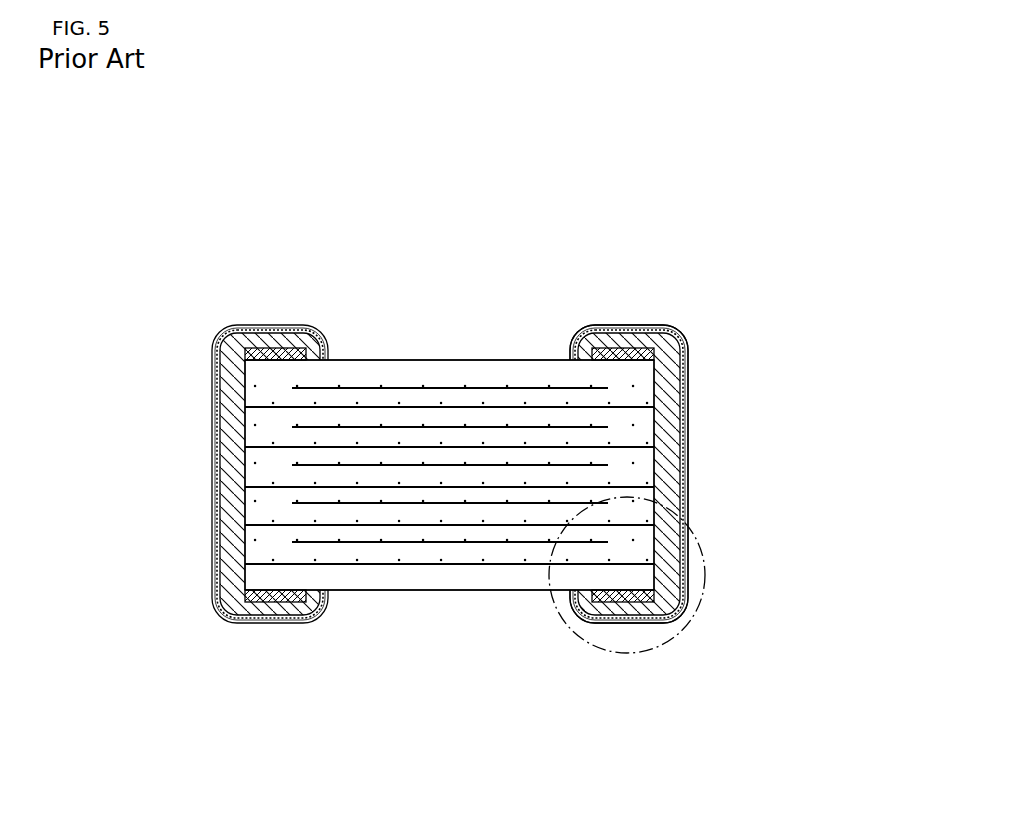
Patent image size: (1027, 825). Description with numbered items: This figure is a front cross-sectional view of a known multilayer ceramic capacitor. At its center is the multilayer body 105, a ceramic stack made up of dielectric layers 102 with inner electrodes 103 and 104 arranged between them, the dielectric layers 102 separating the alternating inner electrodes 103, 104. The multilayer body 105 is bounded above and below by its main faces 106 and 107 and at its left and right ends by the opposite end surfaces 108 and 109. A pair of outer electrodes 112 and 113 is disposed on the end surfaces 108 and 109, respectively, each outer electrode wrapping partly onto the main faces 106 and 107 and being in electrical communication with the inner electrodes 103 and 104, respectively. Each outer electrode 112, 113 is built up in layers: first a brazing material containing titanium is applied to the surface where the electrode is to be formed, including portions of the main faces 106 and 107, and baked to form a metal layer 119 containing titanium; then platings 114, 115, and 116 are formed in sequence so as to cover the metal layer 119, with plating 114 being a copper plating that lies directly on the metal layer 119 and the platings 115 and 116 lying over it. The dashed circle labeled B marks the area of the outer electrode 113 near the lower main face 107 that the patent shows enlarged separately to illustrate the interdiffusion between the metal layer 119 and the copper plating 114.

The dielectric layers 102 is at (410, 435).
The inner electrode 103 is at (477, 447).
The inner electrode 104 is at (448, 503).
The multilayer body 105 is at (522, 359).
The main face 106 is at (417, 360).
The main face 107 is at (488, 590).
The end surface 108 is at (247, 462).
The end surface 109 is at (655, 443).
The outer electrode 112 is at (412, 469).
The outer electrode 113 is at (776, 325).
The plating 114 is at (213, 365).
The plating 115 is at (213, 395).
The plating 116 is at (213, 425).
The metal layer 119 is at (274, 350).
The area B is at (683, 630).